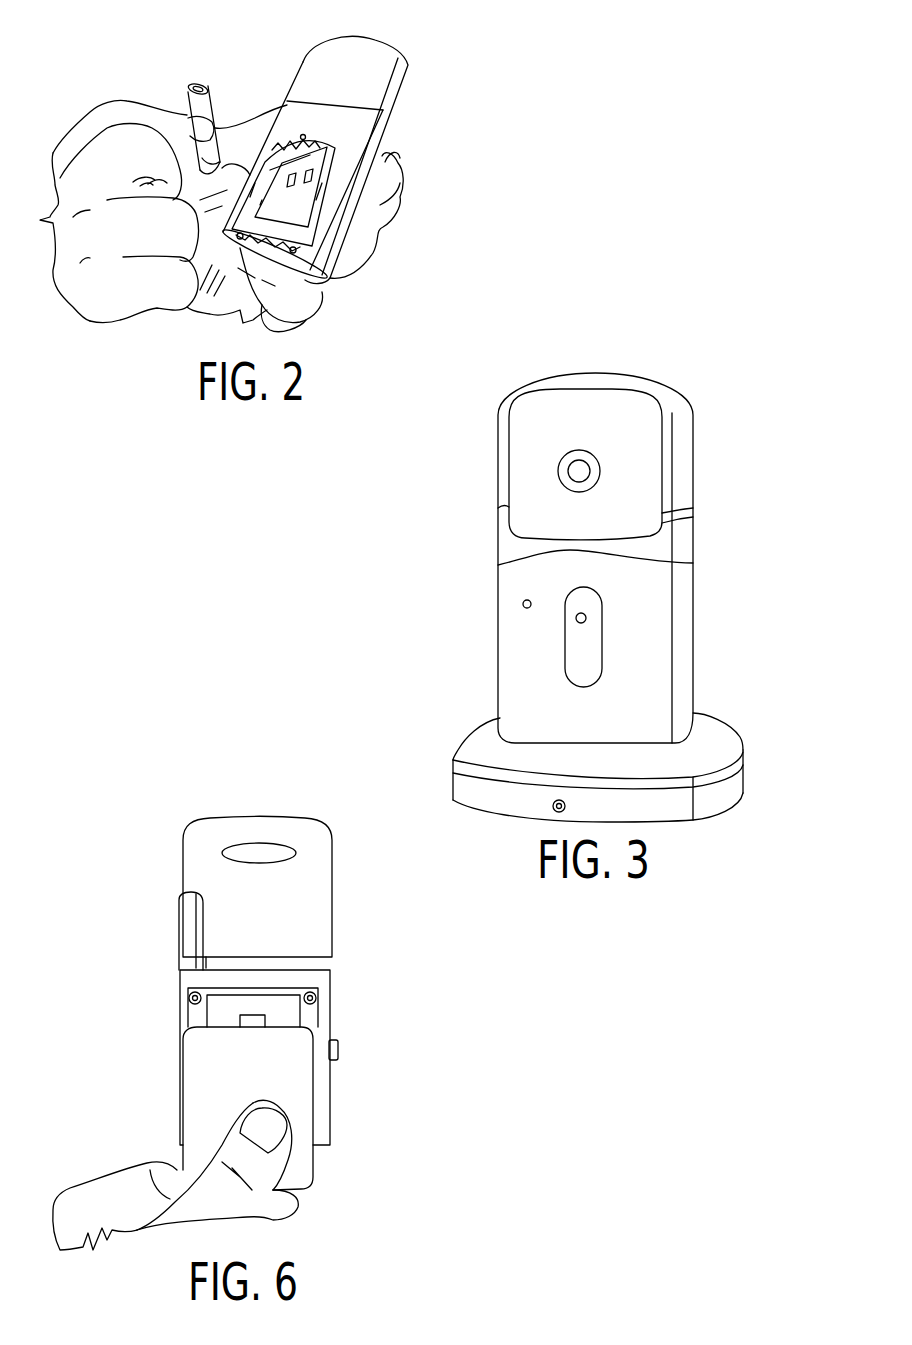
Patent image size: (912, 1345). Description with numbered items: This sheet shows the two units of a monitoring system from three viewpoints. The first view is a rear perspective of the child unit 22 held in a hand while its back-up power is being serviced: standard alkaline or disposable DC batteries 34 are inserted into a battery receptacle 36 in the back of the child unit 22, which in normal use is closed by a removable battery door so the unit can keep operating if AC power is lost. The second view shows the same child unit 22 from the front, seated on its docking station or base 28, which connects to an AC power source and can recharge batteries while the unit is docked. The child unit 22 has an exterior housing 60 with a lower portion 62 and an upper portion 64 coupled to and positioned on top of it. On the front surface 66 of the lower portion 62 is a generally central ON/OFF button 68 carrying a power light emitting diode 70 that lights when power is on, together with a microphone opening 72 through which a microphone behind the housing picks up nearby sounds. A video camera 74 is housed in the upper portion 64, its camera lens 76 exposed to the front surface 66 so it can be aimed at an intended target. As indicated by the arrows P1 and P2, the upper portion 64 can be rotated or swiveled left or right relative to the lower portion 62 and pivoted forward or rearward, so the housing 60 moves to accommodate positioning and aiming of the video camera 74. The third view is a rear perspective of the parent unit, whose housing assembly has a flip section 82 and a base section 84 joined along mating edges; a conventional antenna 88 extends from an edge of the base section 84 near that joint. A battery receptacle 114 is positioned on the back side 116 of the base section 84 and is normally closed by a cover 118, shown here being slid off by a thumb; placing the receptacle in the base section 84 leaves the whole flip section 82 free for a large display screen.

In FIG. 2, the child unit 22 is at (415, 112).
In FIG. 3, the child unit 22 is at (591, 558).
In FIG. 2, the DC batteries 34 is at (212, 102).
In FIG. 2, the battery receptacle 36 is at (296, 205).
In FIG. 3, the docking station or base 28 is at (478, 748).
In FIG. 3, the exterior housing 60 is at (495, 657).
In FIG. 3, the lower portion 62 is at (693, 677).
In FIG. 3, the upper portion 64 is at (693, 481).
In FIG. 3, the front surface 66 is at (600, 732).
In FIG. 3, the ON/OFF button 68 is at (600, 658).
In FIG. 3, the power light emitting diode 70 is at (586, 618).
In FIG. 3, the microphone opening 72 is at (523, 604).
In FIG. 3, the video camera 74 is at (604, 456).
In FIG. 3, the camera lens 76 is at (580, 470).
In FIG. 6, the flip section 82 is at (333, 897).
In FIG. 6, the base section 84 is at (333, 1097).
In FIG. 6, the antenna 88 is at (190, 928).
In FIG. 6, the battery receptacle 114 is at (218, 1008).
In FIG. 6, the back side 116 is at (322, 1007).
In FIG. 6, the cover 118 is at (205, 1098).
In FIG. 3, the arrow P1 is at (593, 553).
In FIG. 3, the arrow P2 is at (639, 449).